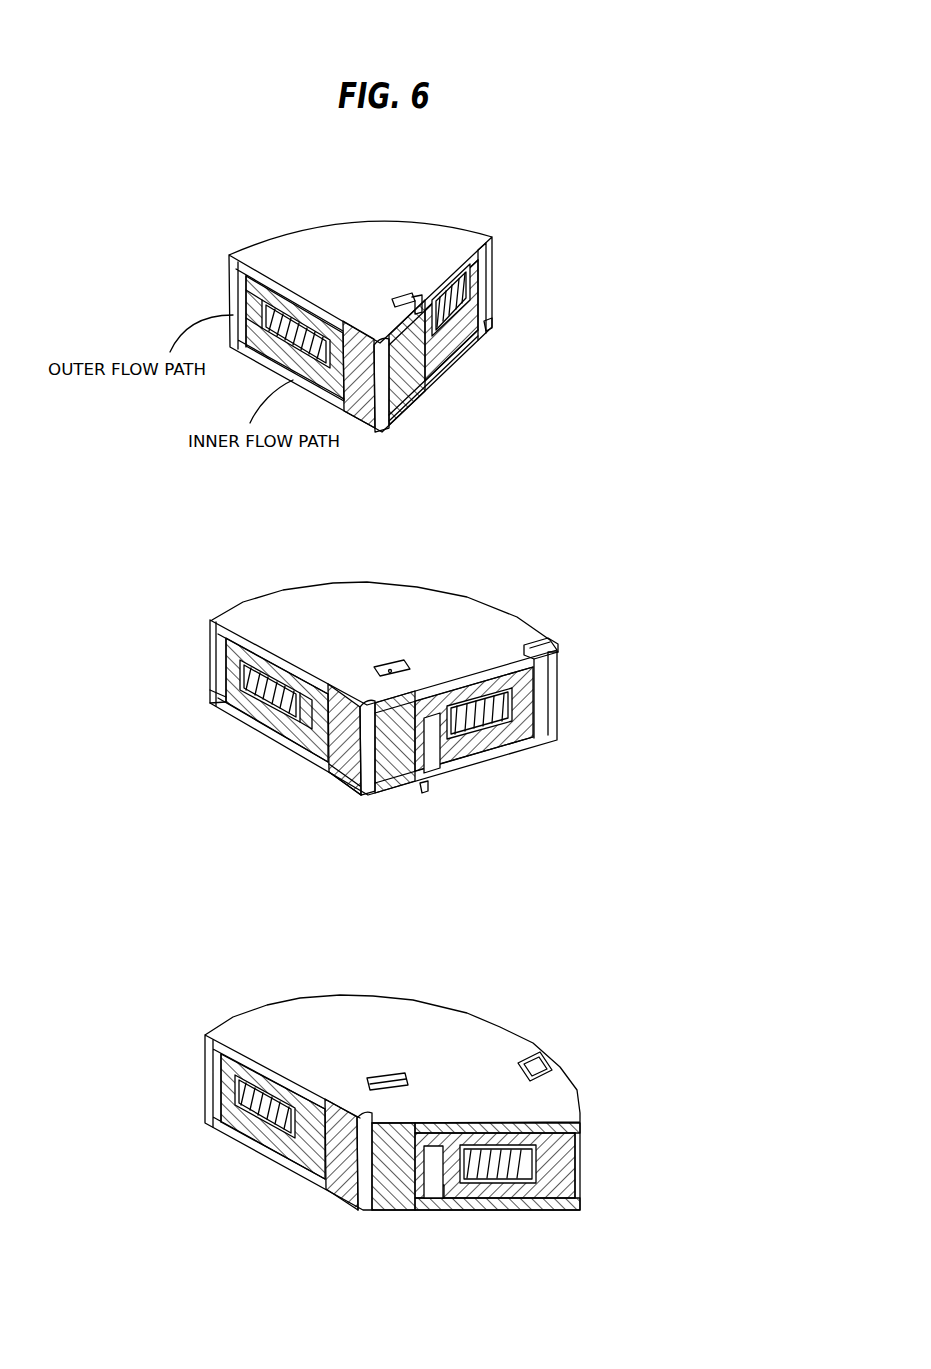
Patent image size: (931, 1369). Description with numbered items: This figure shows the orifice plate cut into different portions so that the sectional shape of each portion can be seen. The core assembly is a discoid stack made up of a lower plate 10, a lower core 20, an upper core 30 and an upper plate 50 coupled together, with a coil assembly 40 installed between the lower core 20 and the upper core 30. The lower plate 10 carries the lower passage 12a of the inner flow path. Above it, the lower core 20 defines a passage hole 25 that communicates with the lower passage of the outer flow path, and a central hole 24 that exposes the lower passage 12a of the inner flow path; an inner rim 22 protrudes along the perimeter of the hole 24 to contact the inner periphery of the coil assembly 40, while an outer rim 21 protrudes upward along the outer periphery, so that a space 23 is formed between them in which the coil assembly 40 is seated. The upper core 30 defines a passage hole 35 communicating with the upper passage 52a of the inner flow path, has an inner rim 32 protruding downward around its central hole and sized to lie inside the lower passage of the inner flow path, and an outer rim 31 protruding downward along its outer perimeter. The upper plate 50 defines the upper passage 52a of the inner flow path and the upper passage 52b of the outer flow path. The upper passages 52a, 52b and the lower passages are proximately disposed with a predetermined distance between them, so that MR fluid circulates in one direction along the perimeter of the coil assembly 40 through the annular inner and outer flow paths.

The lower plate 10 is at (260, 365).
The coil assembly 40 is at (290, 290).
The upper plate 50 is at (456, 268).
The upper core 30 is at (460, 285).
The lower core 20 is at (435, 385).
The lower passage of the inner flow path 12a is at (499, 802).
The passage hole 25 is at (484, 325).
The upper passage of the inner flow path 52a is at (372, 613).
The passage hole 35 is at (408, 302).
The outer rim 21 is at (215, 652).
The space 23 is at (215, 680).
The inner rim 22 is at (270, 740).
The outer rim 31 is at (212, 708).
The hole 24 is at (307, 747).
The inner rim 32 is at (328, 773).
The upper passage of the outer flow path 52b is at (533, 643).